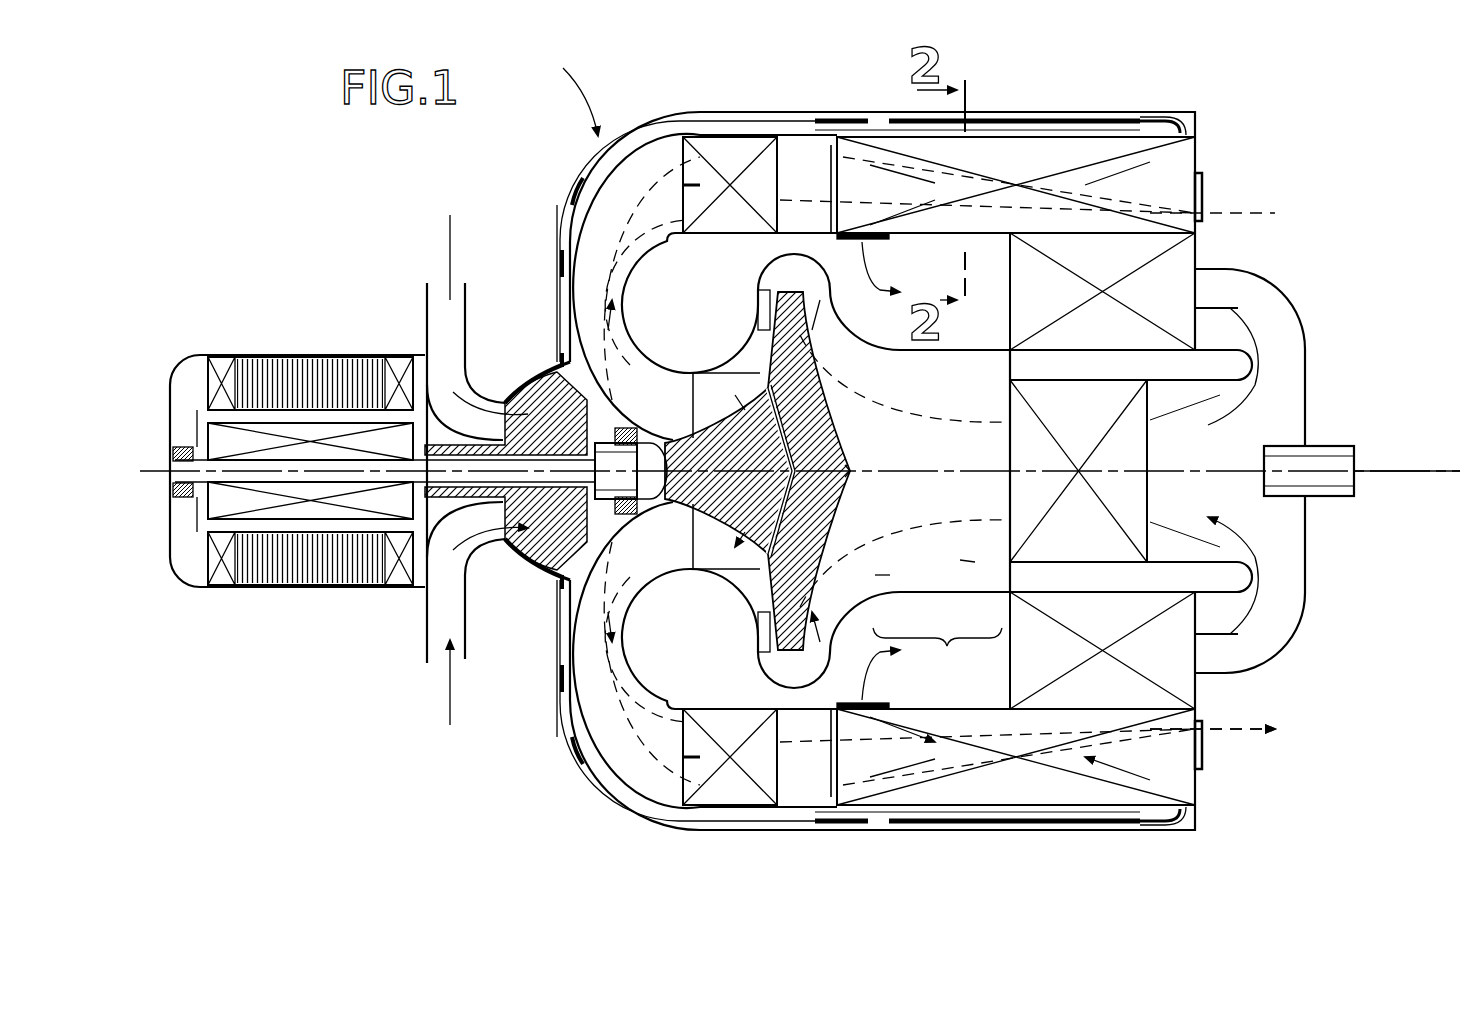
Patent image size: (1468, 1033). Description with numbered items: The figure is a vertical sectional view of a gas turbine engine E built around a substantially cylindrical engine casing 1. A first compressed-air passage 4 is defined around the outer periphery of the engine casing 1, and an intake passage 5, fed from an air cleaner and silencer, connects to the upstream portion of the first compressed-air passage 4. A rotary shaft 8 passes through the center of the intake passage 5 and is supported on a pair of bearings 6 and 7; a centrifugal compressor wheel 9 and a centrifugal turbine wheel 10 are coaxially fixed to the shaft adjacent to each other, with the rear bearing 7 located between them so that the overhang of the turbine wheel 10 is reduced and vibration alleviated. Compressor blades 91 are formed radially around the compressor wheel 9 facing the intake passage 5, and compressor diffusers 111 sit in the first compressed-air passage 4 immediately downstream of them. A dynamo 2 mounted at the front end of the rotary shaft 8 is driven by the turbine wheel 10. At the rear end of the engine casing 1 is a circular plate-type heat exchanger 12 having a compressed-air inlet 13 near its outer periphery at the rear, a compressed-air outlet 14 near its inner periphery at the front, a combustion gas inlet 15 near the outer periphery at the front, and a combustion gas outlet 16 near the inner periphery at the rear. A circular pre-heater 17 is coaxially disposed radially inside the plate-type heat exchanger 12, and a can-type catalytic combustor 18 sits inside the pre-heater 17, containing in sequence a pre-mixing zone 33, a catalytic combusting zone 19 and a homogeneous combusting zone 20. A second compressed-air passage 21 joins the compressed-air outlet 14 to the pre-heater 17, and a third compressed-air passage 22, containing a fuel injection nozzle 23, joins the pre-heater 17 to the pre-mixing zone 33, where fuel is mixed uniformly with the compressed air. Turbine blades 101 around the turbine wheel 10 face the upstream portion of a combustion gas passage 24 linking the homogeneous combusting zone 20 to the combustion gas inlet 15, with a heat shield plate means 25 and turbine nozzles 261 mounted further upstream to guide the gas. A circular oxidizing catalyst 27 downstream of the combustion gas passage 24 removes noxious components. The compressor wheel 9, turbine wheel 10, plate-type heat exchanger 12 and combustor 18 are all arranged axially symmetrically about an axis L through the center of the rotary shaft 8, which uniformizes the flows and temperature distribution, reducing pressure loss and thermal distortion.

The engine casing 1 is at (712, 108).
The dynamo 2 is at (330, 352).
The first compressed-air passage 4 is at (797, 117).
The intake passage 5 is at (436, 330).
The bearing 6 is at (183, 446).
The bearing 7 is at (618, 432).
The rotary shaft 8 is at (567, 517).
The centrifugal compressor wheel 9 is at (543, 567).
The compressor blades 91 is at (553, 385).
The centrifugal turbine wheel 10 is at (728, 582).
The turbine blades 101 is at (708, 388).
The compressor diffusers 111 is at (562, 323).
The plate-type heat exchanger 12 is at (1000, 133).
The compressed-air inlet 13 is at (1180, 118).
The compressed-air outlet 14 is at (887, 238).
The combustion gas inlet 15 is at (832, 167).
The combustion gas outlet 16 is at (1205, 188).
The pre-heater 17 is at (1013, 678).
The can-type catalytic combustor 18 is at (932, 471).
The catalytic combusting zone 19 is at (973, 563).
The homogeneous combusting zone 20 is at (882, 576).
The second compressed-air passage 21 is at (979, 328).
The third compressed-air passage 22 is at (1290, 346).
The fuel injection nozzle 23 is at (1333, 484).
The combustion gas passage 24 is at (630, 325).
The heat shield plate means 25 is at (843, 463).
The turbine nozzles 261 is at (762, 316).
The oxidizing catalyst 27 is at (708, 723).
The pre-mixing zone 33 is at (996, 576).
The gas turbine engine E is at (567, 89).
The axis L is at (1392, 466).